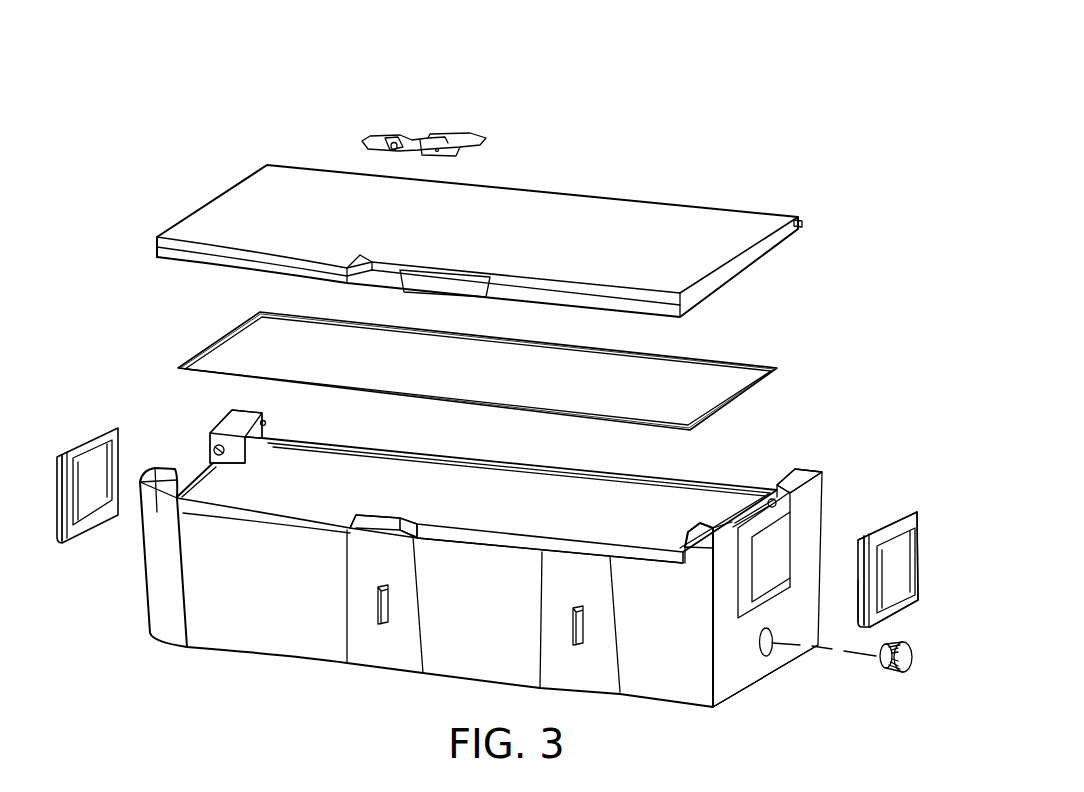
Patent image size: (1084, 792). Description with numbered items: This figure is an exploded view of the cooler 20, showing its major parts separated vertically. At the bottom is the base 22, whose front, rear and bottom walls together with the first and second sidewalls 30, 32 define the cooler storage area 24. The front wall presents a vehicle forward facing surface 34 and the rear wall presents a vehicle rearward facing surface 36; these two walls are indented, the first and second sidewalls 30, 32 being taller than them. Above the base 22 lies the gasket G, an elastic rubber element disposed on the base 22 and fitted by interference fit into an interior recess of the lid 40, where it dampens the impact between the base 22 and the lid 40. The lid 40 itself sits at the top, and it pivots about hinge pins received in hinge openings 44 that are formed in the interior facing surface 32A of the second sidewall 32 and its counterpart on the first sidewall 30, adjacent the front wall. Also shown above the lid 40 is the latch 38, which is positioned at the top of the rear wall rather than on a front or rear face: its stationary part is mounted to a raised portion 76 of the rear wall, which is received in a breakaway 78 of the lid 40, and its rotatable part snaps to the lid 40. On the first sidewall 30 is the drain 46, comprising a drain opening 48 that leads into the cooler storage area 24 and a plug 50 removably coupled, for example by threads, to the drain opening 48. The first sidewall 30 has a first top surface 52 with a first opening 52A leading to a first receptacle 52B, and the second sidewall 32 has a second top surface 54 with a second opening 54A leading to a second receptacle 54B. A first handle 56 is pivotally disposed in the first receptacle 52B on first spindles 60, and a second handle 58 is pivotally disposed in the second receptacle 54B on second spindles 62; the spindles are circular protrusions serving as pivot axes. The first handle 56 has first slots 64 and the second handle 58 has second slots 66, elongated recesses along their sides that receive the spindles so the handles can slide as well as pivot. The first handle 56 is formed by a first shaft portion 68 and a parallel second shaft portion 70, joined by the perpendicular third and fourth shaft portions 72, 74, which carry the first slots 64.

The cooler 20 is at (784, 104).
The base 22 is at (758, 440).
The cooler storage area 24 is at (590, 500).
The first sidewall 30 is at (800, 476).
The second sidewall 32 is at (248, 414).
The interior facing surface 32A is at (250, 446).
The vehicle forward facing surface 34 is at (468, 456).
The vehicle rearward facing surface 36 is at (490, 536).
The latch 38 is at (426, 122).
The lid 40 is at (624, 180).
The hinge openings 44 is at (260, 167).
The drain 46 is at (824, 710).
The drain opening 48 is at (770, 656).
The plug 50 is at (902, 676).
The first top surface 52 is at (692, 538).
The first opening 52A is at (776, 500).
The first receptacle 52B is at (751, 560).
The second top surface 54 is at (168, 478).
The second opening 54A is at (240, 425).
The second receptacle 54B is at (172, 462).
The first handle 56 is at (900, 500).
The second handle 58 is at (76, 420).
The first spindle 60 is at (762, 505).
The second spindle 62 is at (222, 456).
The first slot 64 is at (866, 560).
The second slot 66 is at (72, 500).
The first shaft portion 68 is at (888, 538).
The second shaft portion 70 is at (924, 568).
The third shaft portion 72 is at (858, 582).
The fourth shaft portion 74 is at (902, 608).
The raised portion 76 is at (398, 522).
The breakaway 78 is at (372, 268).
The gasket G is at (718, 358).